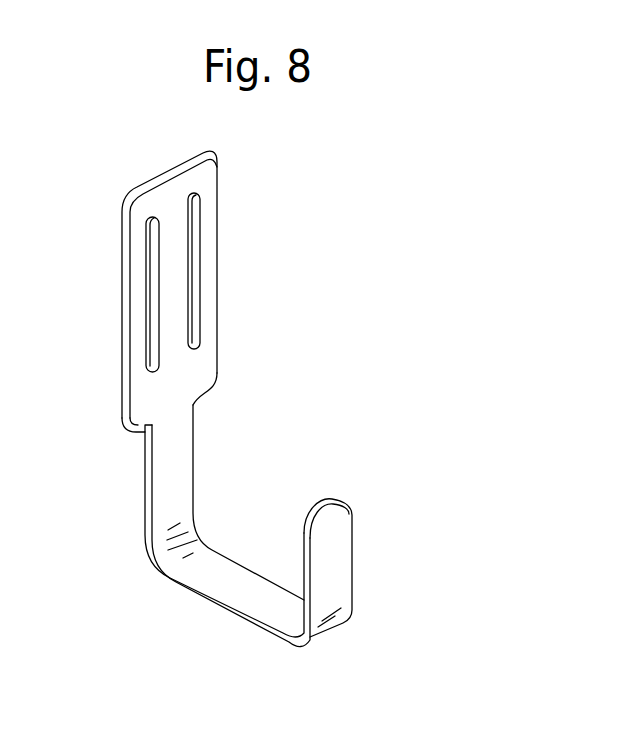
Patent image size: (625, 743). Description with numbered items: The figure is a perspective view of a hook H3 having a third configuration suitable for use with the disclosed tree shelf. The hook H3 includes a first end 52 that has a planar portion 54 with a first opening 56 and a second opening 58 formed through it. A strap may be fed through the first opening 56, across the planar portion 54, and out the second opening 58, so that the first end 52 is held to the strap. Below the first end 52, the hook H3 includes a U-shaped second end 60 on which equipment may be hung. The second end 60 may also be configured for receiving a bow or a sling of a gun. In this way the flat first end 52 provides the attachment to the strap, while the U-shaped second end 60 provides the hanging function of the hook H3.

The hook H3 is at (267, 233).
The first end 52 is at (102, 275).
The planar portion 54 is at (197, 367).
The first opening 56 is at (150, 342).
The second opening 58 is at (197, 302).
The second end 60 is at (212, 620).